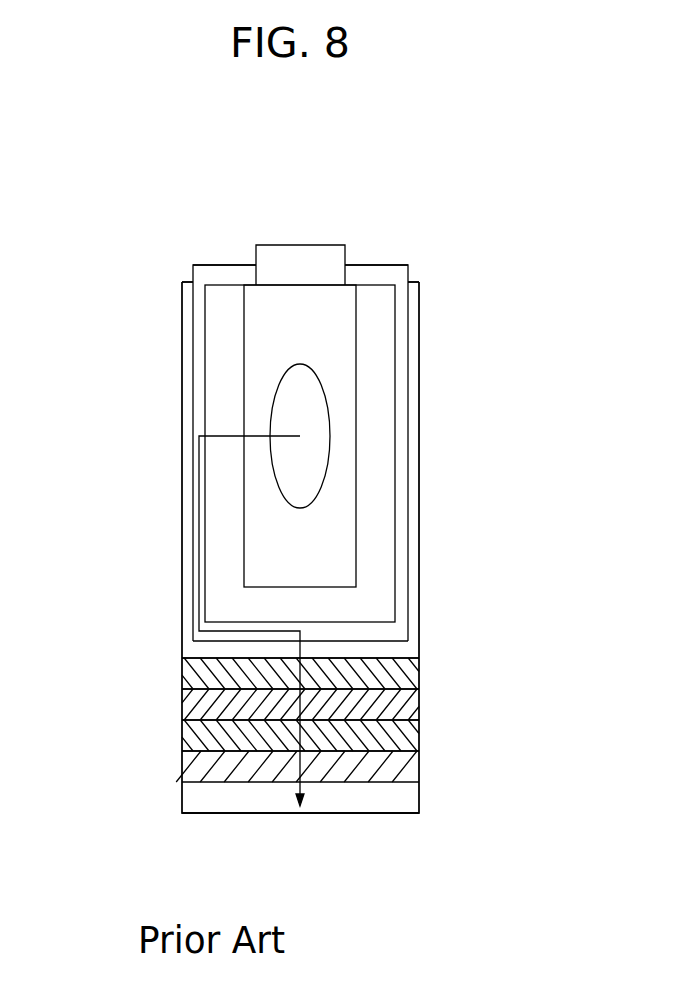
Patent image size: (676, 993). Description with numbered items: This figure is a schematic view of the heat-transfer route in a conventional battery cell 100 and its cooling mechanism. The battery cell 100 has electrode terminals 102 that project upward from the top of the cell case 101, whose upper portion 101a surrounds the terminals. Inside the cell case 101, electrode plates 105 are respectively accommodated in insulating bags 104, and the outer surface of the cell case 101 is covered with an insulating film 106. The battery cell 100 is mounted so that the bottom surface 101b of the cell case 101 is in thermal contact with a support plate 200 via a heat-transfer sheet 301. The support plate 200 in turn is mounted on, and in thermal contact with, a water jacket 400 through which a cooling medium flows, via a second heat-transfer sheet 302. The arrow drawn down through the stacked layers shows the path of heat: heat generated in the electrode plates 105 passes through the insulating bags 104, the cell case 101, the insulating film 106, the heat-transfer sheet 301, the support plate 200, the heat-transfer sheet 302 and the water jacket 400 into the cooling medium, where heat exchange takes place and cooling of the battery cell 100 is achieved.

The battery cell 100 is at (433, 241).
The cell case 101 is at (408, 432).
The case upper portion 101a is at (223, 262).
The bottom surface 101b is at (388, 676).
The electrode terminal 102 is at (300, 245).
The insulating bag 104 is at (223, 323).
The electrode plate 105 is at (337, 540).
The insulating film 106 is at (419, 313).
The support plate 200 is at (184, 706).
The heat-transfer sheet 301 is at (188, 676).
The heat-transfer sheet 302 is at (188, 736).
The water jacket 400 is at (427, 752).